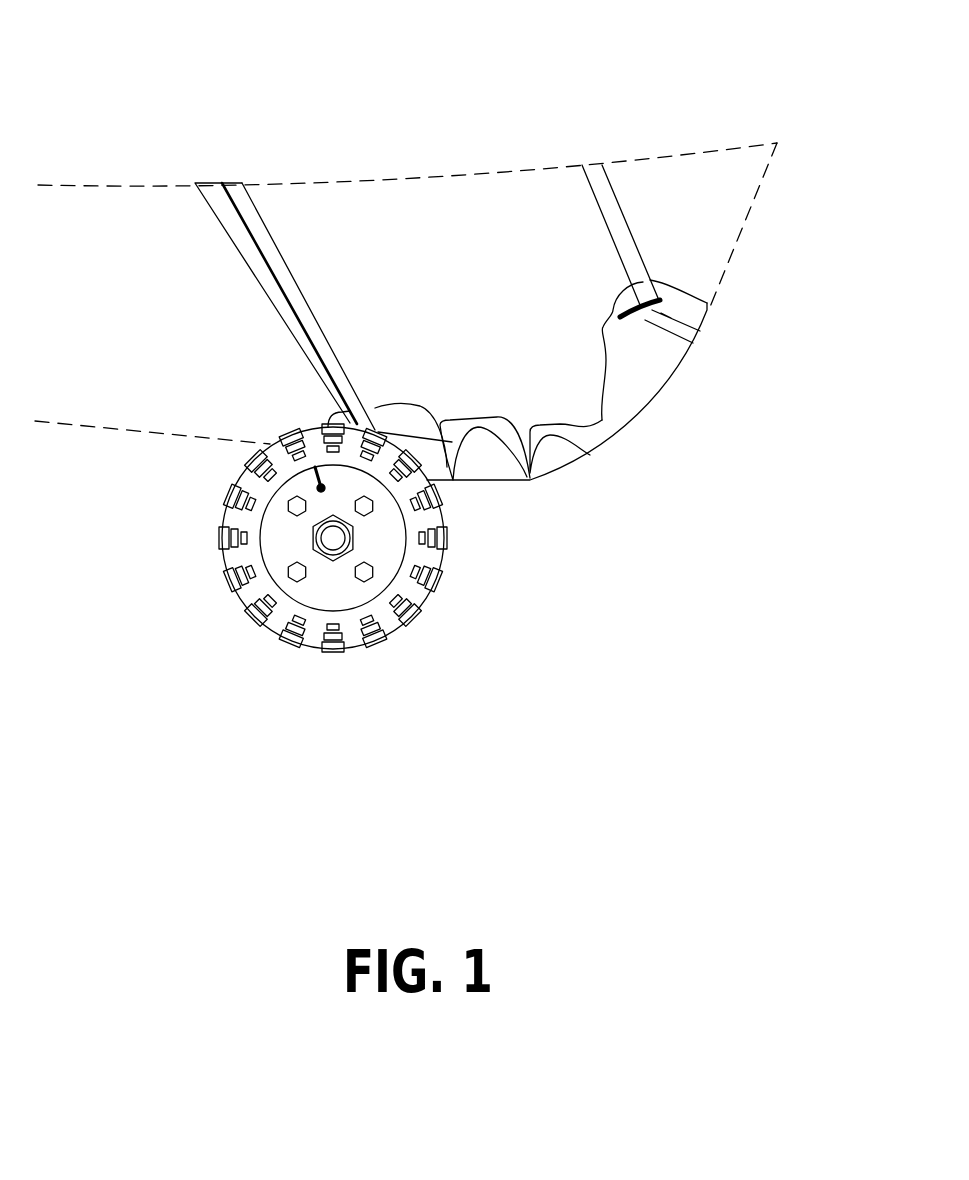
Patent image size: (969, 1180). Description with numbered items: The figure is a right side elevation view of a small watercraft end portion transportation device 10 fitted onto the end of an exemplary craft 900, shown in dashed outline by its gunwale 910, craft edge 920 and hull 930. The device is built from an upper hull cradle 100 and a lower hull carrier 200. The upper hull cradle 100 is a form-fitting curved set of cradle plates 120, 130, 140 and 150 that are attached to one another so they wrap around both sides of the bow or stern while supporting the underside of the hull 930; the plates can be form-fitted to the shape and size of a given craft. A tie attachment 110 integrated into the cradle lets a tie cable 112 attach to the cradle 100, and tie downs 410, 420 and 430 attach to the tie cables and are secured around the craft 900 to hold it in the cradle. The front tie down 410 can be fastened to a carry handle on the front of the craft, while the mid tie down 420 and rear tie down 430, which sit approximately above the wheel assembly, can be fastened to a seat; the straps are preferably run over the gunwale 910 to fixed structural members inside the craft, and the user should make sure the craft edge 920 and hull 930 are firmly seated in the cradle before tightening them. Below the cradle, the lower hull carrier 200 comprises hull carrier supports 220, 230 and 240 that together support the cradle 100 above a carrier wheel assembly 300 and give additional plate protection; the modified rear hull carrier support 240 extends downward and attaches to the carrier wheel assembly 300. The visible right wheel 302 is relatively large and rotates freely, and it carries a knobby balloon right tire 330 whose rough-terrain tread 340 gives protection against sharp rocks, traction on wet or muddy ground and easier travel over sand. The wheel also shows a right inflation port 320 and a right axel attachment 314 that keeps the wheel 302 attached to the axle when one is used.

The small watercraft end portion transportation device 10 is at (700, 748).
The upper hull cradle 100 is at (578, 352).
The tie attachment 110 is at (612, 306).
The tie cable 112 is at (620, 315).
The cradle plate 120 is at (660, 390).
The cradle plate 130 is at (558, 423).
The cradle plate 140 is at (468, 420).
The cradle plate 150 is at (388, 403).
The lower hull carrier 200 is at (615, 516).
The hull carrier support 220 is at (563, 470).
The hull carrier support 230 is at (495, 480).
The rear hull carrier support 240 is at (448, 480).
The carrier wheel assembly 300 is at (308, 595).
The right wheel 302 is at (308, 577).
The right axel attachment 314 is at (323, 538).
The right inflation port 320 is at (315, 487).
The right tire 330 is at (407, 610).
The rough-terrain tread 340 is at (363, 668).
The front tie down 410 is at (582, 165).
The mid tie down 420 is at (317, 310).
The rear tie down 430 is at (245, 265).
The craft 900 is at (203, 92).
The craft gunwale 910 is at (98, 185).
The craft edge 920 is at (757, 212).
The craft hull 930 is at (167, 443).